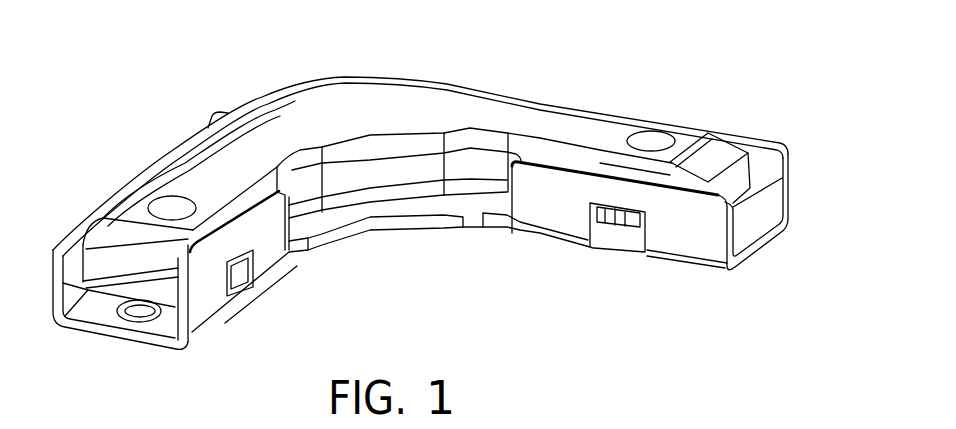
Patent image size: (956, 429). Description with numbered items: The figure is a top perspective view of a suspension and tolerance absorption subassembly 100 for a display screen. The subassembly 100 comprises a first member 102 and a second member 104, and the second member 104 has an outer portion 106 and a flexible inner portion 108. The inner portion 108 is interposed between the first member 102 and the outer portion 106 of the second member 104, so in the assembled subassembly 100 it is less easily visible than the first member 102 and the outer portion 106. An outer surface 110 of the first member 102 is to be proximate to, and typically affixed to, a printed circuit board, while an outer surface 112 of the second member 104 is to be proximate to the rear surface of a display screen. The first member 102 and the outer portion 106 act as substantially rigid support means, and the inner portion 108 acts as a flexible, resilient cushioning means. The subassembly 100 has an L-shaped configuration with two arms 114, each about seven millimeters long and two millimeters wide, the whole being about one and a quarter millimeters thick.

The suspension and tolerance absorption subassembly 100 is at (673, 80).
The first member 102 is at (738, 266).
The second member 104 is at (723, 150).
The outer portion 106 is at (148, 270).
The flexible inner portion 108 is at (160, 305).
The outer surface 110 is at (393, 228).
The outer surface 112 is at (351, 88).
The arms 114 is at (213, 170).